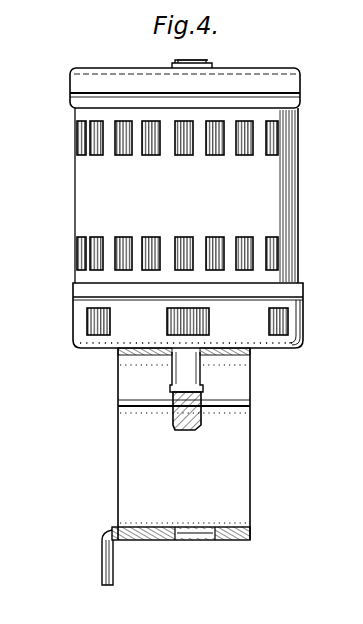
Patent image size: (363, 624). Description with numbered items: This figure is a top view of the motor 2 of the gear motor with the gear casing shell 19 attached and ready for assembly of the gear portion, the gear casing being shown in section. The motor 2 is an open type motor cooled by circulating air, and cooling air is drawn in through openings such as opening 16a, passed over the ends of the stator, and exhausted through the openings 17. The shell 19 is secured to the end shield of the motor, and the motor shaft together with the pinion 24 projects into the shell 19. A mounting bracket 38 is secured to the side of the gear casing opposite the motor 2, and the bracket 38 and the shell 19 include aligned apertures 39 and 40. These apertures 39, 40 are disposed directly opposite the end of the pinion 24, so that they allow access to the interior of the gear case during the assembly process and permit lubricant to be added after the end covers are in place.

The motor 2 is at (73, 204).
The openings 17 is at (218, 156).
The opening 16a is at (284, 322).
The gear casing shell 19 is at (252, 465).
The pinion 24 is at (203, 428).
The mounting bracket 38 is at (103, 538).
The aperture 39 is at (181, 535).
The aperture 40 is at (185, 527).